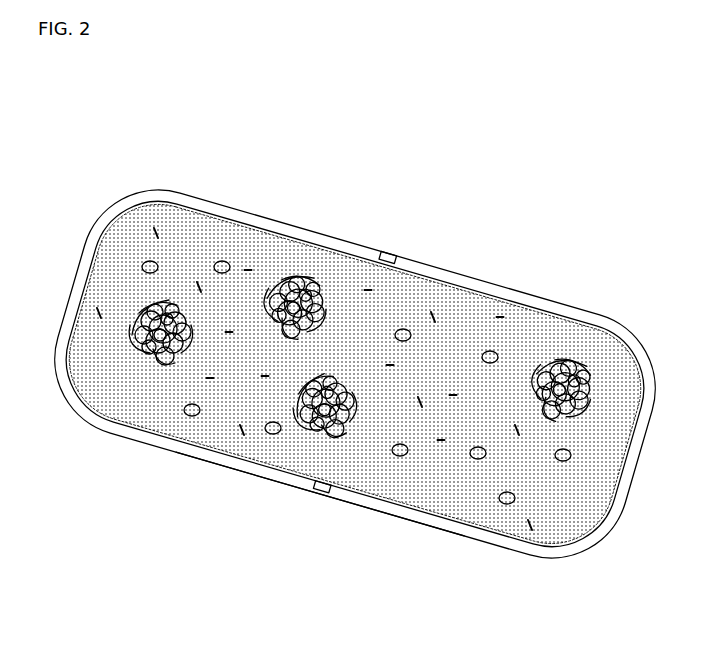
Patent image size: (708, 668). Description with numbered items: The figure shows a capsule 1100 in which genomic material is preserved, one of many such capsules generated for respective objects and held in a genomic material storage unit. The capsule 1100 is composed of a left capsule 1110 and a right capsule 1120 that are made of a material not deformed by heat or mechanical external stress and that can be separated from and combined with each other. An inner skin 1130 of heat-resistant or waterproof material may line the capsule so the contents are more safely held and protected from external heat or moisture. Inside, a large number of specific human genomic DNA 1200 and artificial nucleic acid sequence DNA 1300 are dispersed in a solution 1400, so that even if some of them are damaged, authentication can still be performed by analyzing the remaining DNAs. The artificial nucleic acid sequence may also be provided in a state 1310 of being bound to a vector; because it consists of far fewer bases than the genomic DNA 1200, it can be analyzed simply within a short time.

The capsule 1100 is at (98, 175).
The left capsule 1110 is at (187, 460).
The right capsule 1120 is at (408, 524).
The inner skin 1130 is at (285, 242).
The human genomic DNA 1200 is at (150, 372).
The artificial nucleic acid sequence DNA 1300 is at (437, 318).
The state of being bound to the vector 1310 is at (273, 436).
The solution 1400 is at (573, 517).